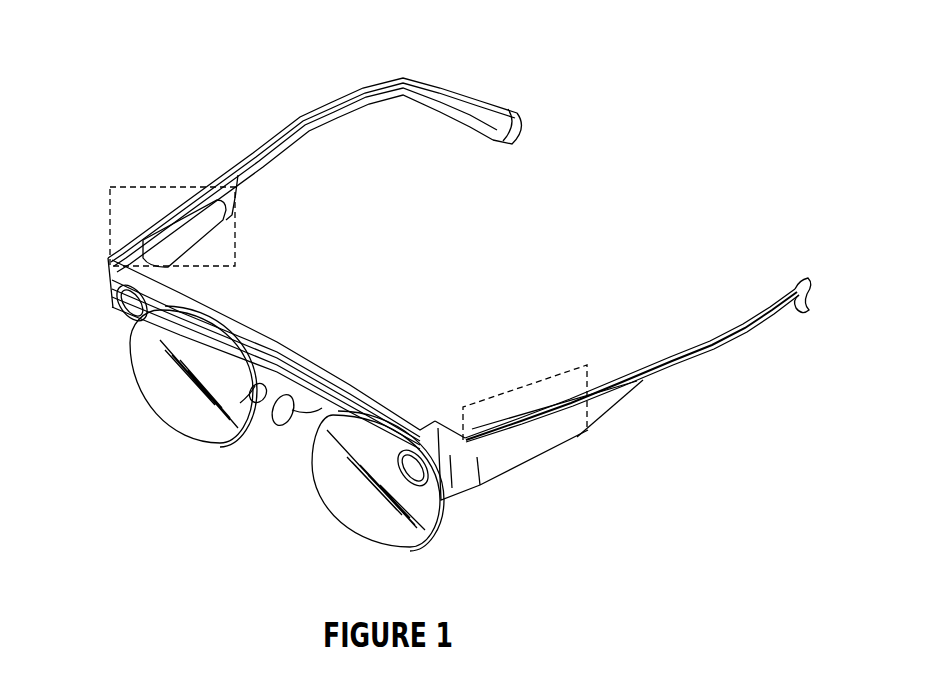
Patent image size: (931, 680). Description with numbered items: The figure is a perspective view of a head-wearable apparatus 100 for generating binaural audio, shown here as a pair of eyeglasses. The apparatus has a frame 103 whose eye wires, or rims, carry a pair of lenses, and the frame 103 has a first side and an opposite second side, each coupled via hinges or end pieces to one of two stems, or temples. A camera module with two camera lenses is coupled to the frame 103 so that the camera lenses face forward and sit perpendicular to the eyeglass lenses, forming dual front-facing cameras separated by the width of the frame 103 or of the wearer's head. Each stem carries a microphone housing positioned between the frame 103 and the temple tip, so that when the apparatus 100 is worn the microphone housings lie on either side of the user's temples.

The head-wearable apparatus 100 is at (140, 38).
The frame 103 is at (140, 360).